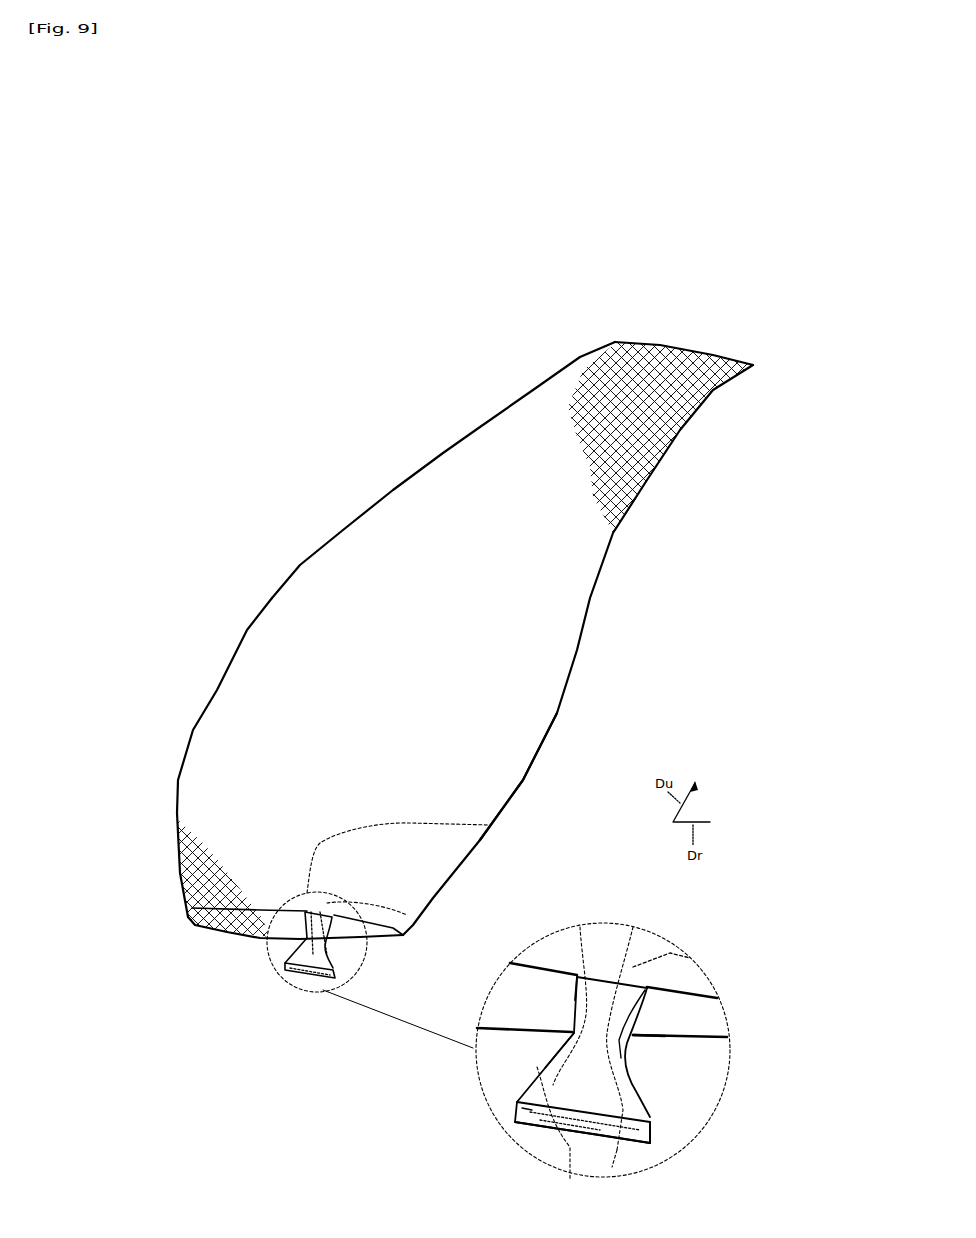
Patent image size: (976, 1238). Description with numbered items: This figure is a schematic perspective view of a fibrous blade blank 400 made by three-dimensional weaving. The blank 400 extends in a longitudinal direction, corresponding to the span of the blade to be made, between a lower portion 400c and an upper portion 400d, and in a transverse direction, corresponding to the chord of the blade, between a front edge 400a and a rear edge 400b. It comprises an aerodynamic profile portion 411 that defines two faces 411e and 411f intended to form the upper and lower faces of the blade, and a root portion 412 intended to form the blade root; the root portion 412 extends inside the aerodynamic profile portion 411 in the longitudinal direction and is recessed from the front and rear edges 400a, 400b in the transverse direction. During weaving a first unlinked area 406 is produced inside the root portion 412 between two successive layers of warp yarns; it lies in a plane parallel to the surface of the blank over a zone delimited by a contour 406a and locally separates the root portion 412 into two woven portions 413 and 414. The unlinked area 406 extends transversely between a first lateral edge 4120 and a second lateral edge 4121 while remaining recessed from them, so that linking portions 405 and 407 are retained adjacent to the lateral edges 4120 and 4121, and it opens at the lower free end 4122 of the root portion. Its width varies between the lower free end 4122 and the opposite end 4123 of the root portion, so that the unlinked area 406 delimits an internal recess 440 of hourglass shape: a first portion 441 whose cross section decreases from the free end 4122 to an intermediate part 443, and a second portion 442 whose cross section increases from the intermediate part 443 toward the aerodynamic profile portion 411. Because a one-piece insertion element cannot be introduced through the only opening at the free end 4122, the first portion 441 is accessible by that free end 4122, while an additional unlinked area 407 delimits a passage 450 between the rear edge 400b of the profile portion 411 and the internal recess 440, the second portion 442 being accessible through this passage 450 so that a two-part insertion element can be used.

The fibrous blade blank 400 is at (465, 660).
The front edge 400a is at (298, 563).
The rear edge 400b is at (552, 717).
The lower portion 400c is at (283, 985).
The upper portion 400d is at (683, 350).
The aerodynamic profile portion 411 is at (515, 657).
The face 411e is at (287, 663).
The face 411f is at (523, 777).
The root portion 412 is at (337, 957).
The first lateral edge 4120 is at (503, 1118).
The second lateral edge 4121 is at (655, 1132).
The lower free end 4122 is at (542, 1133).
The end of the root portion 4123 is at (573, 987).
The woven portion 413 is at (618, 1132).
The woven portion 414 is at (593, 1132).
The linking portion 405 is at (530, 1106).
The first unlinked area 406 is at (566, 1135).
The contour 406a is at (610, 1167).
The additional unlinked area 407 is at (422, 860).
The internal recess 440 is at (593, 1038).
The first portion 441 is at (567, 1066).
The second portion 442 is at (690, 958).
The intermediate part 443 is at (663, 1040).
The passage 450 is at (633, 930).